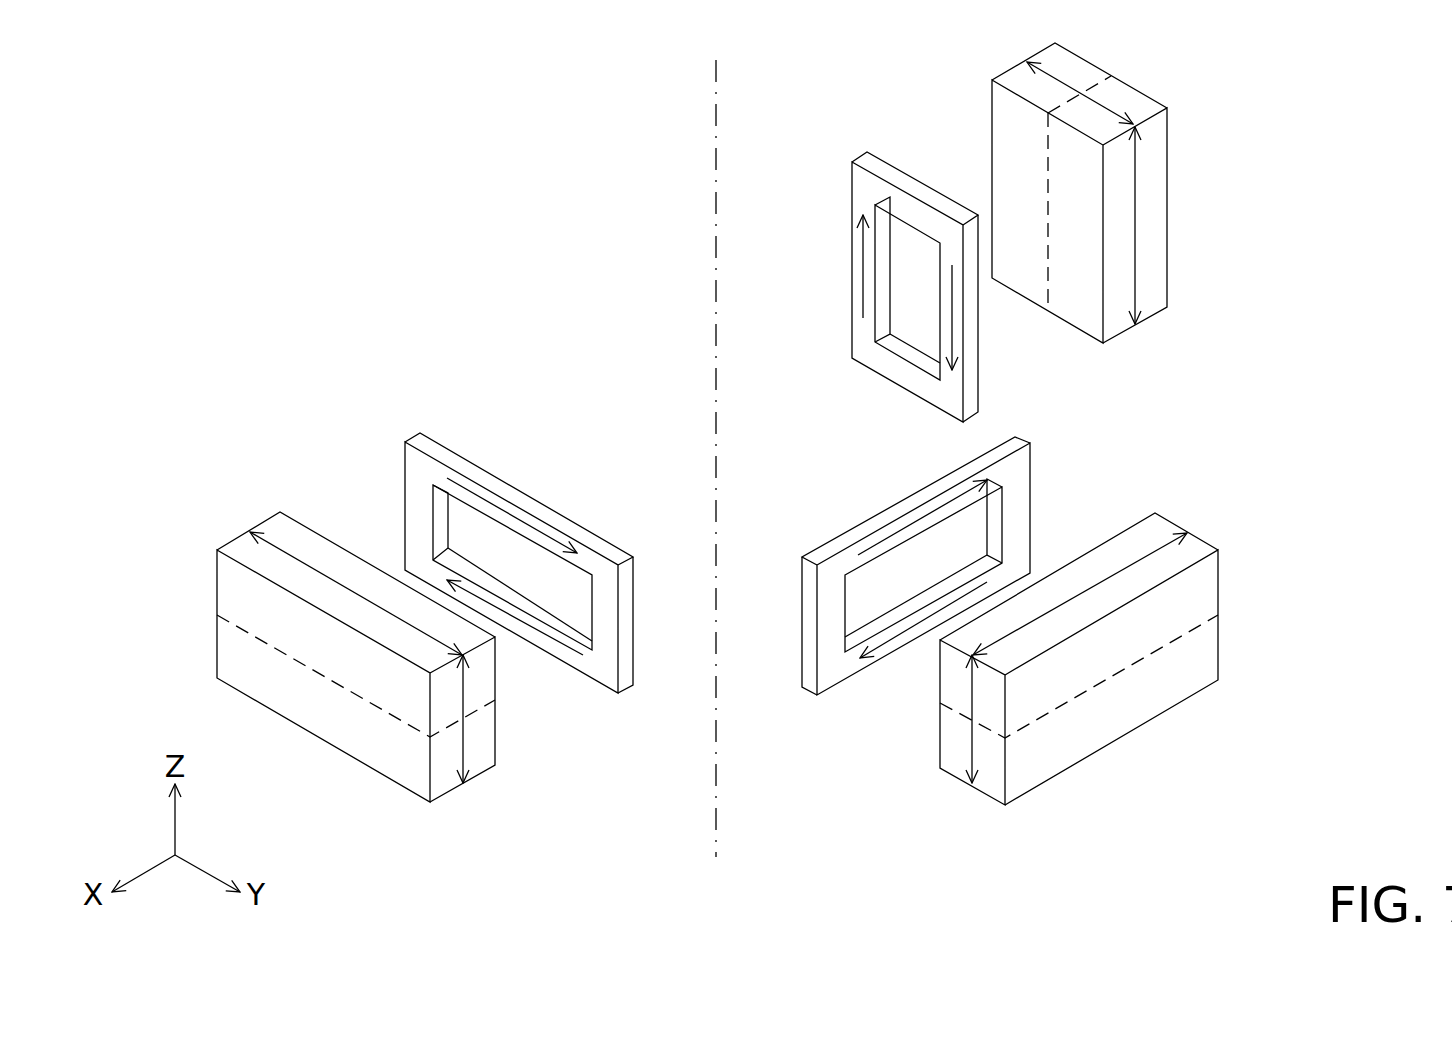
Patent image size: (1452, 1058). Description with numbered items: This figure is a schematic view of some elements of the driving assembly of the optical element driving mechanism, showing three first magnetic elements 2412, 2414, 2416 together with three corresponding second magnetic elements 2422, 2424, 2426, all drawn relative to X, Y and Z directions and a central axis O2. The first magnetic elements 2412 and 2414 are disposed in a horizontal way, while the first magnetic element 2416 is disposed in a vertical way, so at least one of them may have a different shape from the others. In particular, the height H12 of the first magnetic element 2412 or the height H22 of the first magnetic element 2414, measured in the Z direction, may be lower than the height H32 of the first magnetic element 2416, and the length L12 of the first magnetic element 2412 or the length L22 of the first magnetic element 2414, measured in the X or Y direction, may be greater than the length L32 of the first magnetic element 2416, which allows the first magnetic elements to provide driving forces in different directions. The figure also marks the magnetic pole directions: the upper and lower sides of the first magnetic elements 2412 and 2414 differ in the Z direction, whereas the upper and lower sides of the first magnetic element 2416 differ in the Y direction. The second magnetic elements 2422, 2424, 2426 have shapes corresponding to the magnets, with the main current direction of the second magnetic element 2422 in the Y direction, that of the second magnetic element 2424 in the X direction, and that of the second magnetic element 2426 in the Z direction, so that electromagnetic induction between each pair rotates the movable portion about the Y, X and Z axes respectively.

The first magnetic element 2412 is at (253, 600).
The first magnetic element 2414 is at (1178, 607).
The first magnetic element 2416 is at (1155, 163).
The second magnetic element 2422 is at (415, 462).
The second magnetic element 2424 is at (860, 535).
The second magnetic element 2426 is at (860, 187).
The length of the first magnetic element L12 is at (343, 585).
The length of the first magnetic element L22 is at (1096, 582).
The length of the first magnetic element L32 is at (1060, 83).
The height of the first magnetic element H12 is at (465, 772).
The height of the first magnetic element H22 is at (975, 768).
The height of the first magnetic element H32 is at (1138, 222).
The central axis O2 is at (716, 443).